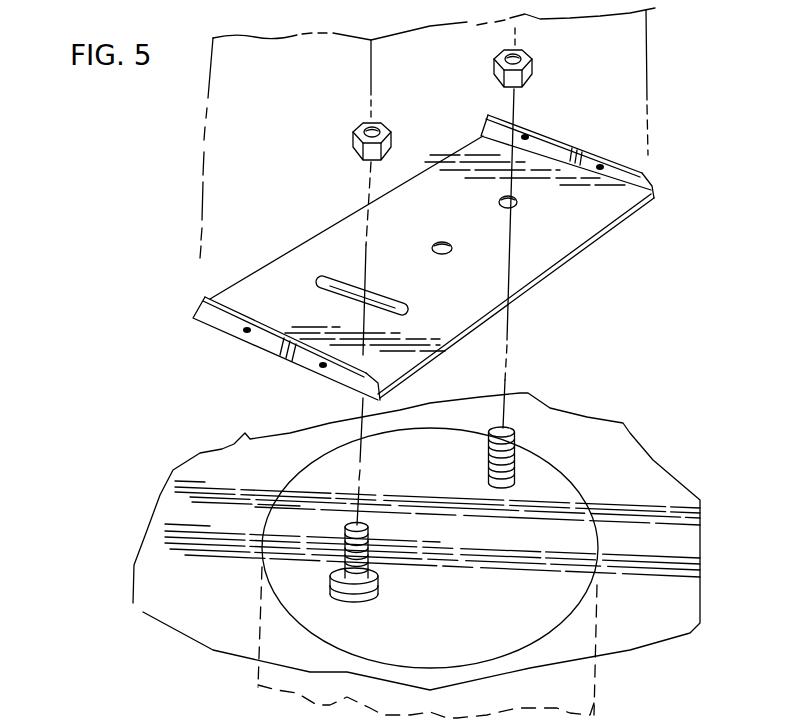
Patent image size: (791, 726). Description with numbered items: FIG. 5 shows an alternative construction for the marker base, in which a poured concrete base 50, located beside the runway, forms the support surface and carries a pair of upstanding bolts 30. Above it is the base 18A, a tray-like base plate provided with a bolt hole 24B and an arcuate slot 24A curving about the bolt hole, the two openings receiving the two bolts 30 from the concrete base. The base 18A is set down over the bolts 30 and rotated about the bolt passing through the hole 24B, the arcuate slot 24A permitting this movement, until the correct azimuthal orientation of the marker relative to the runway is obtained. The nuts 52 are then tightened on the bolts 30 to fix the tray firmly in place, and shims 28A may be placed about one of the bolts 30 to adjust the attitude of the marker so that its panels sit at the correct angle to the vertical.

The base 18A is at (540, 297).
The arcuate slot 24A is at (391, 305).
The bolt hole 24B is at (499, 203).
The nuts 52 is at (355, 127).
The bolts 30 is at (516, 440).
The shims 28A is at (400, 577).
The poured concrete base 50 is at (555, 602).